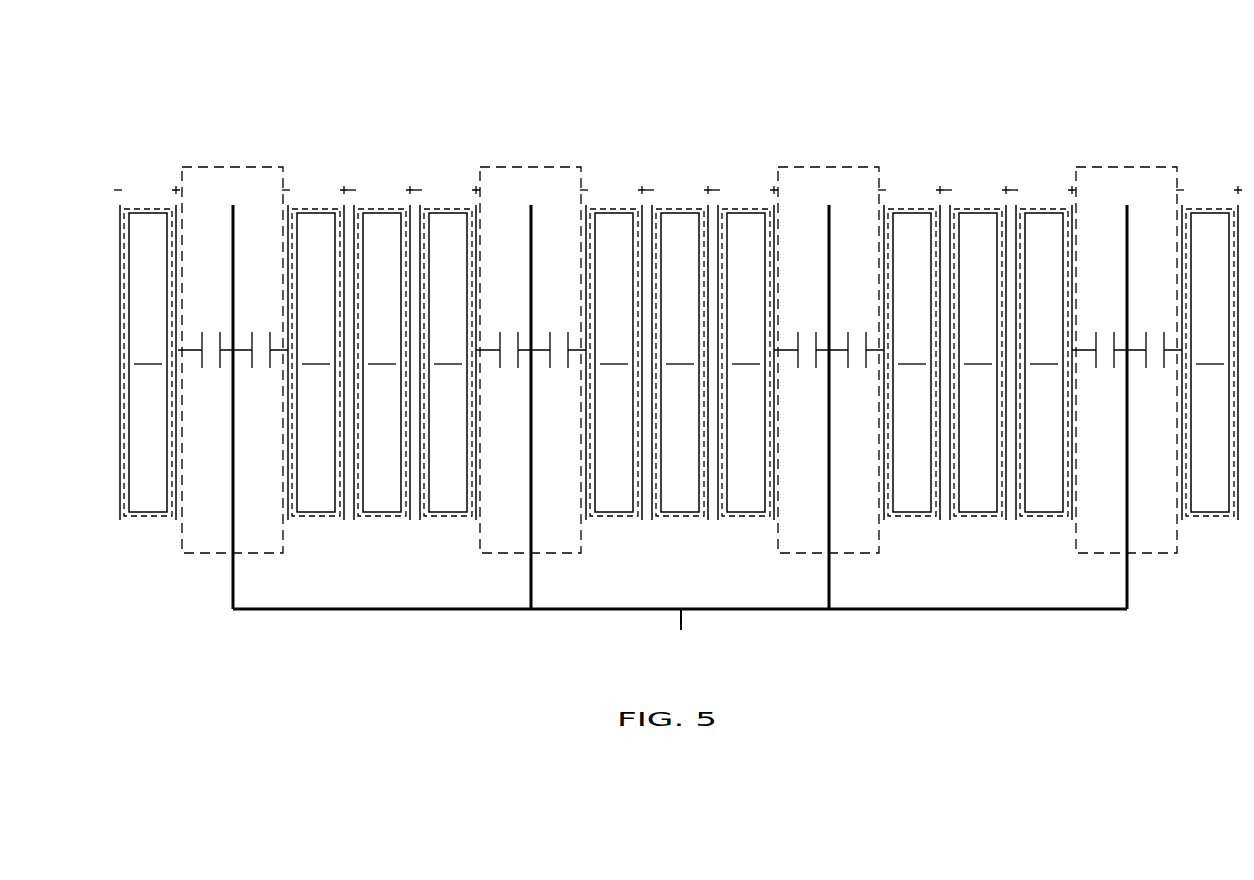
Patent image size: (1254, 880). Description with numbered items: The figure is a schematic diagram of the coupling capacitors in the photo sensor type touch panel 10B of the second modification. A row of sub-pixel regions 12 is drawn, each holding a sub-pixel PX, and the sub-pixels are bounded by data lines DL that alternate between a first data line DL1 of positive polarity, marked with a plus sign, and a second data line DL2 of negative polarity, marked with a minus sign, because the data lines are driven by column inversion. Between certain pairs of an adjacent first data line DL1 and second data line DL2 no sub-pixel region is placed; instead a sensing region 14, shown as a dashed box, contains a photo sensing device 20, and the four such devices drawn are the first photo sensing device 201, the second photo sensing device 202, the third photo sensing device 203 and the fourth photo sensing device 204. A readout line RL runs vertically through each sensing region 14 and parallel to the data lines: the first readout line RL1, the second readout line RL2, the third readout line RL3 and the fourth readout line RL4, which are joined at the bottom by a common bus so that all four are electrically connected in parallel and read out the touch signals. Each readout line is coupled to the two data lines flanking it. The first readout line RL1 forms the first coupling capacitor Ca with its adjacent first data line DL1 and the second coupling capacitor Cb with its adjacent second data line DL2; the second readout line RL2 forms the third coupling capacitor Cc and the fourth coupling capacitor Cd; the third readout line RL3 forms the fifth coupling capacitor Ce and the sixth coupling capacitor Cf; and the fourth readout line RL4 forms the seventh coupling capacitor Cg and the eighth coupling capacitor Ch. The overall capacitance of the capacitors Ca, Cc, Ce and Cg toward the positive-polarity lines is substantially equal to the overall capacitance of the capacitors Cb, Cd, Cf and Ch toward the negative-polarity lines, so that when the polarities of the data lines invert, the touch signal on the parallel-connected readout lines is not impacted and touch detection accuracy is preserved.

The photo sensor type touch panel 10B is at (1156, 62).
The sub-pixel region 12 is at (154, 520).
The sensing region 14 is at (195, 556).
The photo sensing device 20 is at (689, 255).
The first photo sensing device 201 is at (261, 200).
The second photo sensing device 202 is at (559, 200).
The third photo sensing device 203 is at (857, 200).
The fourth photo sensing device 204 is at (1155, 200).
The sub-pixel PX is at (679, 352).
The data line DL is at (677, 305).
The first data line DL1 is at (176, 208).
The second data line DL2 is at (120, 208).
The readout line RL is at (655, 426).
The first readout line RL1 is at (232, 610).
The second readout line RL2 is at (530, 610).
The third readout line RL3 is at (828, 610).
The fourth readout line RL4 is at (1126, 610).
The first coupling capacitor Ca is at (205, 362).
The second coupling capacitor Cb is at (260, 362).
The third coupling capacitor Cc is at (503, 362).
The fourth coupling capacitor Cd is at (558, 362).
The fifth coupling capacitor Ce is at (801, 362).
The sixth coupling capacitor Cf is at (856, 362).
The seventh coupling capacitor Cg is at (1099, 362).
The eighth coupling capacitor Ch is at (1154, 362).